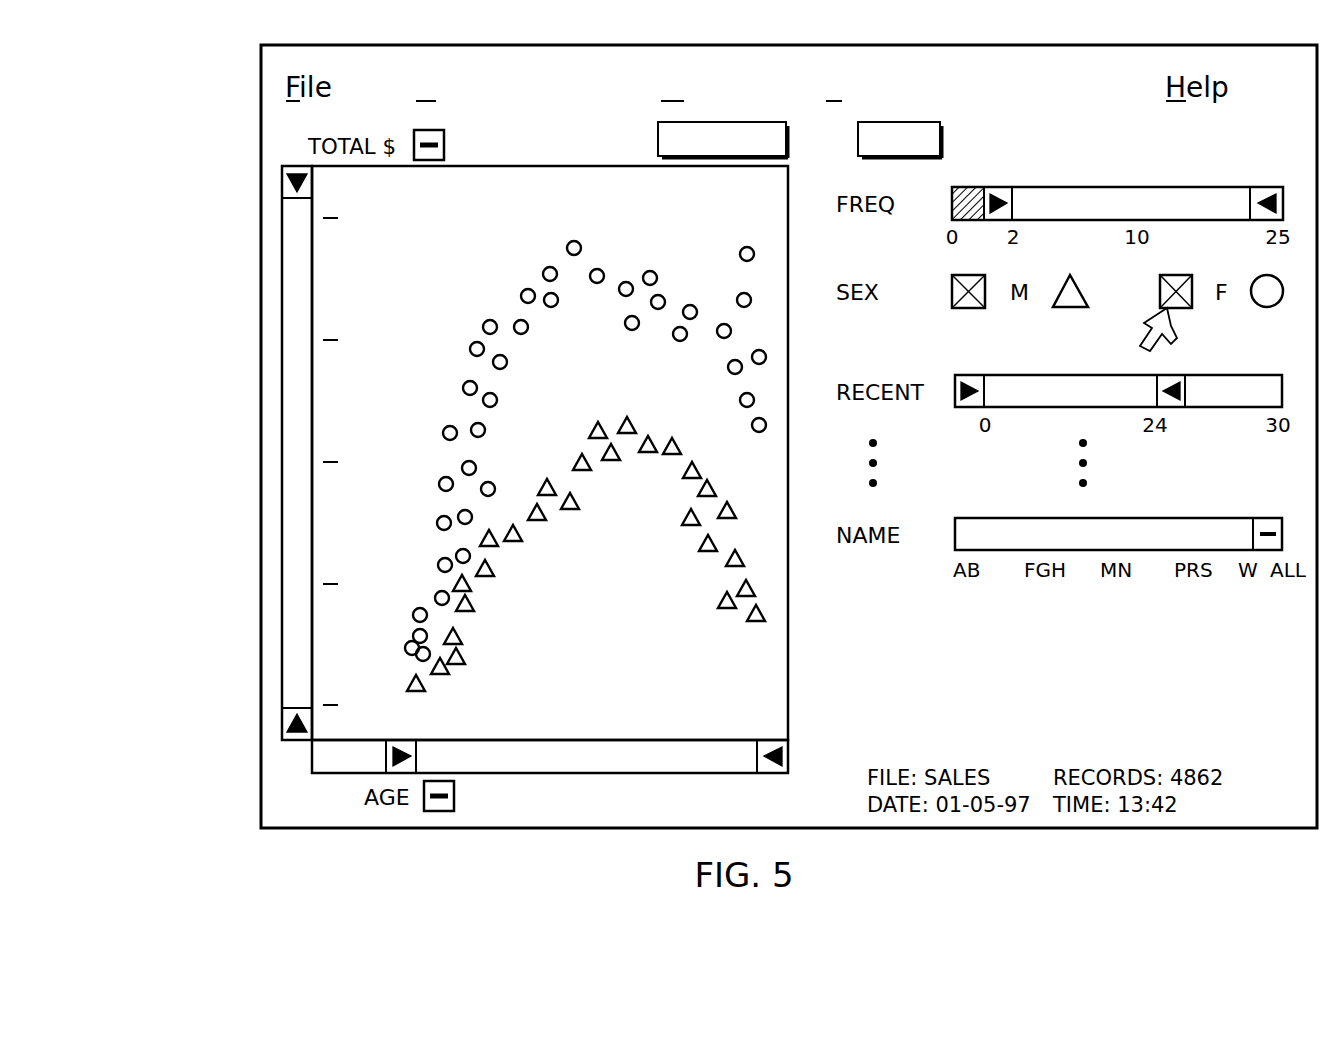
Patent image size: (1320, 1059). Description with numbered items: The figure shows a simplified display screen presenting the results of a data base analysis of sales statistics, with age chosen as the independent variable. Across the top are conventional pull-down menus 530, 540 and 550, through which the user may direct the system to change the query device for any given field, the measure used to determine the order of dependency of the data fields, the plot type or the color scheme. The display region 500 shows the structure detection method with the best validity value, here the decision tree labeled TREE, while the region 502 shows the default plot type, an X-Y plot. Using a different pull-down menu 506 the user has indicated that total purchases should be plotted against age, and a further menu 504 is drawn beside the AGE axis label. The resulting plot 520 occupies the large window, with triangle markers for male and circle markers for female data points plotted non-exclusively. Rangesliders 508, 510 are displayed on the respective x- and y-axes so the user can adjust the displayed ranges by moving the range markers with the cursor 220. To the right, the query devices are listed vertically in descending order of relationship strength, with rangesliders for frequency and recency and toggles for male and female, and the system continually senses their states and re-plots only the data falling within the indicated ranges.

The pull-down menu 530 is at (472, 72).
The pull-down menu 540 is at (726, 72).
The pull-down menu 550 is at (892, 72).
The pull-down menu 506 is at (447, 145).
The display region 500 is at (658, 139).
The region 502 is at (943, 139).
The rangeslider 510 is at (281, 280).
The plot 520 is at (345, 405).
The AGE attribute button 504 is at (456, 796).
The rangeslider 508 is at (622, 774).
The cursor 220 is at (1146, 332).